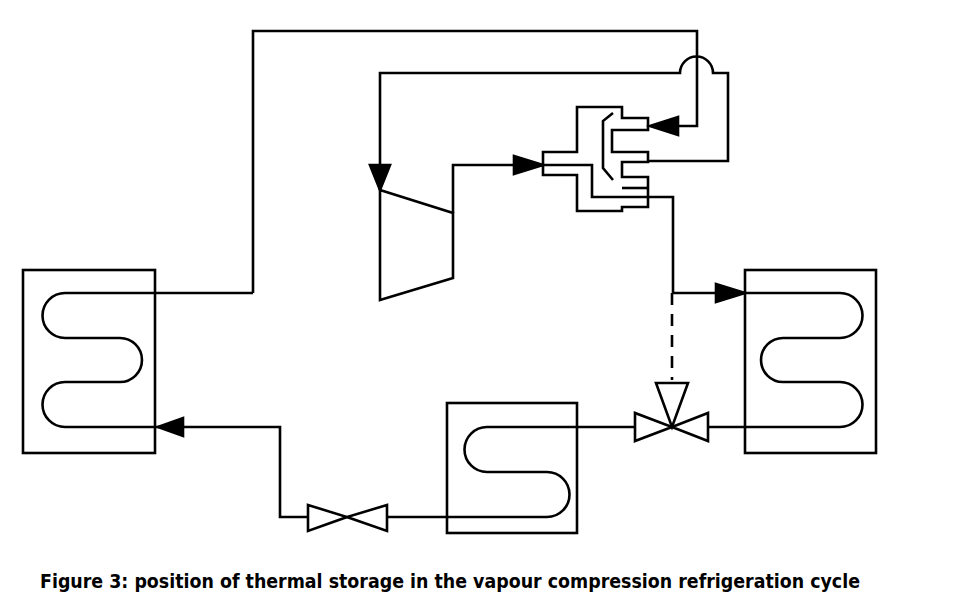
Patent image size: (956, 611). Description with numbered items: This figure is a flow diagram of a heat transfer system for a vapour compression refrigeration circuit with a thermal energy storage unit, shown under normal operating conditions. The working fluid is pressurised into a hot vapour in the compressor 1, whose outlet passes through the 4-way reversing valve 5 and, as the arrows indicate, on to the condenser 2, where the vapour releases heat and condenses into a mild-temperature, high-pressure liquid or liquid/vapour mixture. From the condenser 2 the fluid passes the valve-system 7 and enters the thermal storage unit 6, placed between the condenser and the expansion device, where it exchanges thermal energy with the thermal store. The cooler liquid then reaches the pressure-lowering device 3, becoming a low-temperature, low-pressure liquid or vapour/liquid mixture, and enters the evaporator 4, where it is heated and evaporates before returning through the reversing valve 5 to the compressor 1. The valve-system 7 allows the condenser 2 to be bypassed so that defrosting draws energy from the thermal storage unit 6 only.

The compressor 1 is at (416, 245).
The condenser 2 is at (792, 361).
The pressure-lowering device 3 is at (347, 495).
The evaporator 4 is at (138, 361).
The 4-way reversing valve 5 is at (595, 183).
The thermal storage unit 6 is at (512, 444).
The valve-system 7 is at (671, 432).